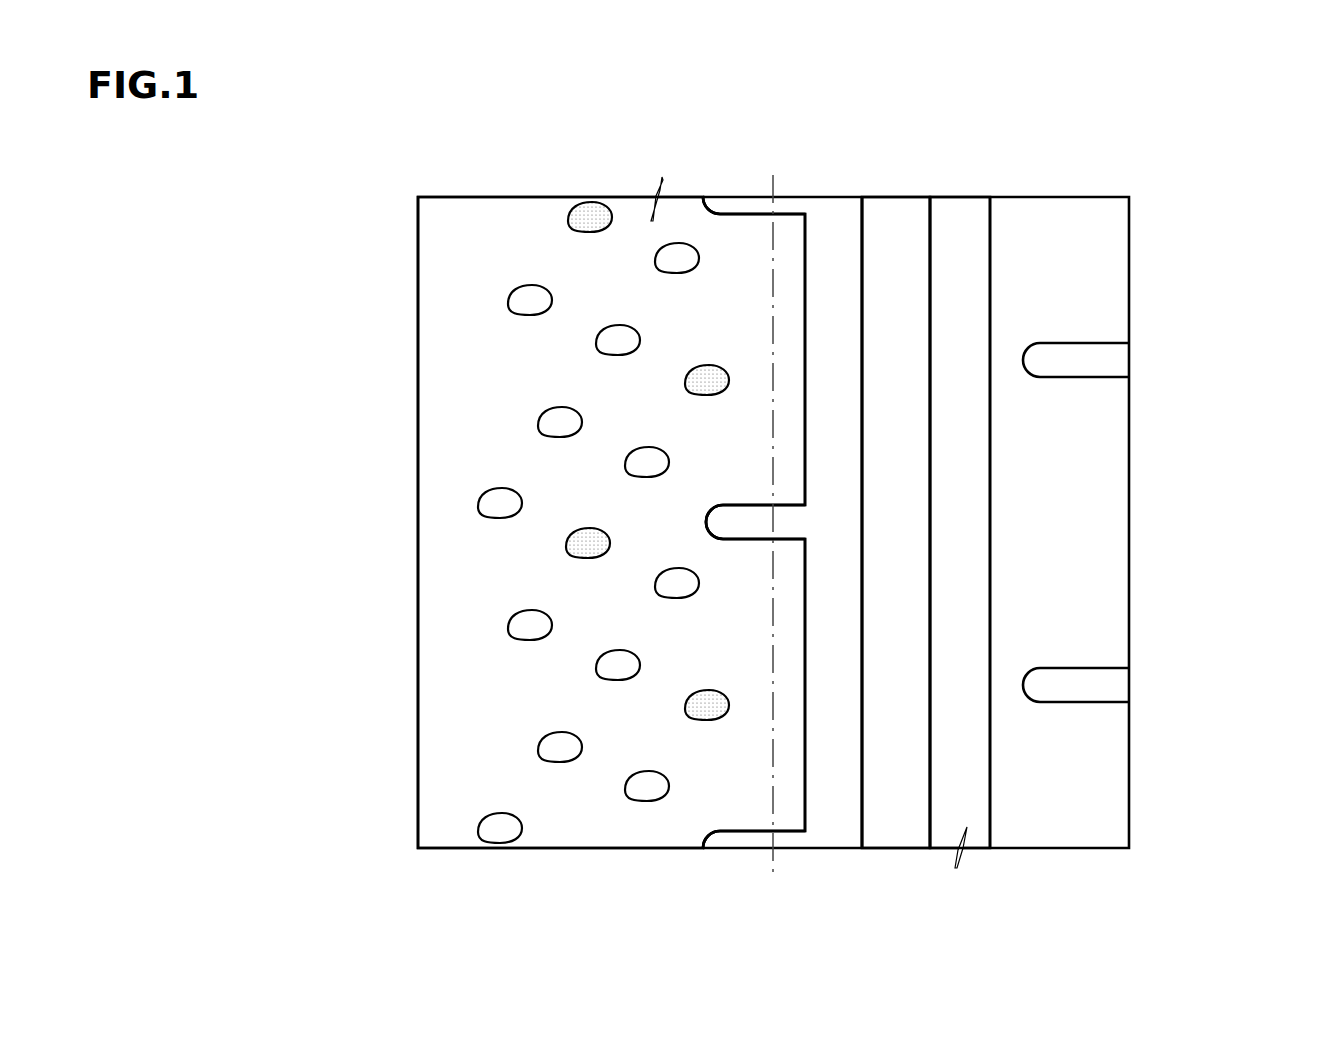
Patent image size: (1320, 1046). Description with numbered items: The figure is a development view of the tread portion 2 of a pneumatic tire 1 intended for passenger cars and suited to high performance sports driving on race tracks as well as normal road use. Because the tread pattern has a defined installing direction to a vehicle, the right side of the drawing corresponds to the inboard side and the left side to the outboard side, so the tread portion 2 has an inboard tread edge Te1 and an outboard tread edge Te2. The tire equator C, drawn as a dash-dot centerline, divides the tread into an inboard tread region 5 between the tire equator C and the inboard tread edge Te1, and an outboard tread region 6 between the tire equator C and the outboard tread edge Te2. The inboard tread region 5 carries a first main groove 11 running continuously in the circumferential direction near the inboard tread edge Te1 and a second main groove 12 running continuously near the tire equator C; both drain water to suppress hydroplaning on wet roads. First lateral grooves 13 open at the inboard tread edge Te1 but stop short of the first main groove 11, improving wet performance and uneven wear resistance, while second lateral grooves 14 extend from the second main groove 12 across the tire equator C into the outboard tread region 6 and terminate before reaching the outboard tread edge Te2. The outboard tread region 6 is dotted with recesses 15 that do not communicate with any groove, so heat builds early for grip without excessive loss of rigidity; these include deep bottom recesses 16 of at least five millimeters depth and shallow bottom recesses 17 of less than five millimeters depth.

The pneumatic tire 1 is at (1012, 180).
The tread portion 2 is at (730, 188).
The inboard tread region 5 is at (922, 188).
The outboard tread region 6 is at (585, 194).
The first main groove 11 is at (953, 253).
The second main groove 12 is at (830, 257).
The first lateral grooves 13 is at (1097, 360).
The second lateral grooves 14 is at (742, 836).
The recesses 15 is at (556, 421).
The deep bottom recesses 16 is at (588, 543).
The shallow bottom recesses 17 is at (500, 502).
The inboard tread edge Te1 is at (1130, 250).
The outboard tread edge Te2 is at (418, 250).
The tire equator C is at (771, 508).